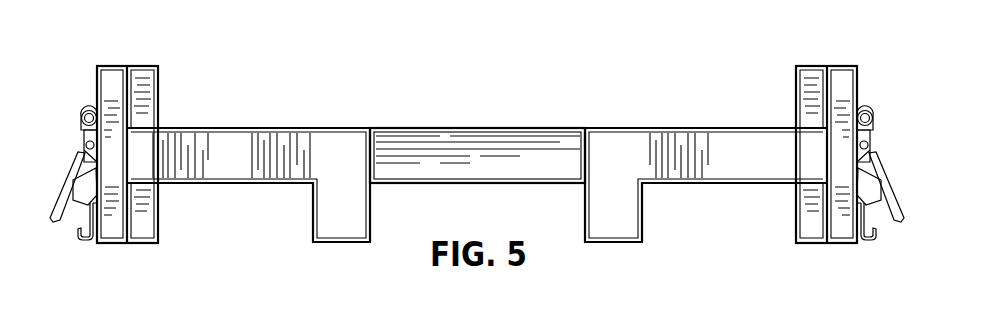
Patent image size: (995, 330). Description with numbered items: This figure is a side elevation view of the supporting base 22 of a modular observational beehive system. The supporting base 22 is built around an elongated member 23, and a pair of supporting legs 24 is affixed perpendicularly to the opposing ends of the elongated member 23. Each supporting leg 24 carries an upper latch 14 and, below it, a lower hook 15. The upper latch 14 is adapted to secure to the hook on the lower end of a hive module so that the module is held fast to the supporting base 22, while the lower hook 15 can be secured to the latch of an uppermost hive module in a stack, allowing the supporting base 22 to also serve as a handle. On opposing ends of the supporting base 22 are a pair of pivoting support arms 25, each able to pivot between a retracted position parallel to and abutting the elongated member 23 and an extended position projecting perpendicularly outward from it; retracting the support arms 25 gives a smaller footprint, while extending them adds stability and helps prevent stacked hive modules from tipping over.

The upper latch 14 is at (83, 143).
The lower hook 15 is at (82, 231).
The supporting base 22 is at (477, 130).
The elongated member 23 is at (483, 143).
The supporting legs 24 is at (112, 75).
The pivoting support arms 25 is at (232, 143).